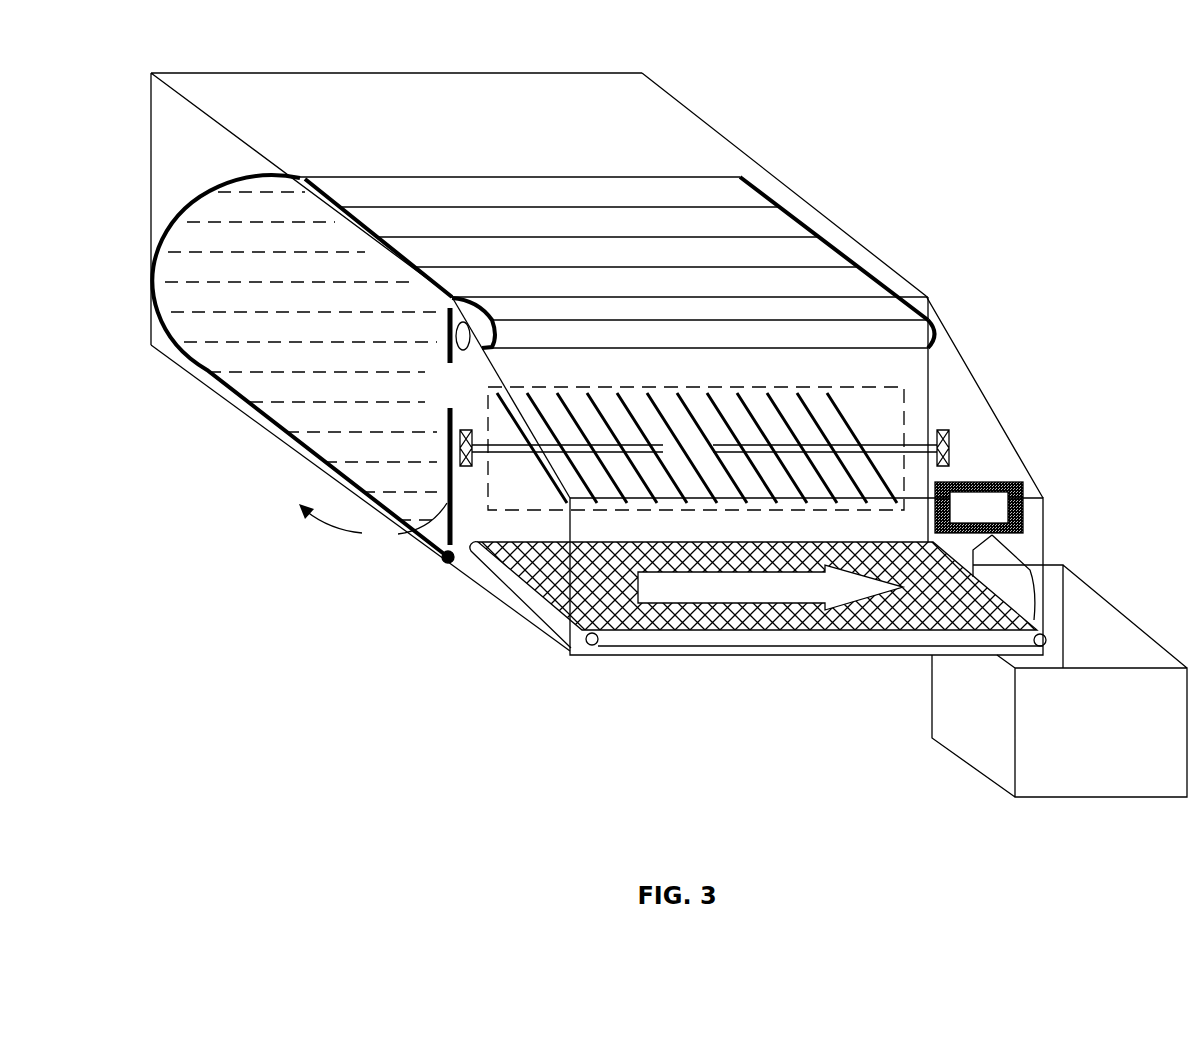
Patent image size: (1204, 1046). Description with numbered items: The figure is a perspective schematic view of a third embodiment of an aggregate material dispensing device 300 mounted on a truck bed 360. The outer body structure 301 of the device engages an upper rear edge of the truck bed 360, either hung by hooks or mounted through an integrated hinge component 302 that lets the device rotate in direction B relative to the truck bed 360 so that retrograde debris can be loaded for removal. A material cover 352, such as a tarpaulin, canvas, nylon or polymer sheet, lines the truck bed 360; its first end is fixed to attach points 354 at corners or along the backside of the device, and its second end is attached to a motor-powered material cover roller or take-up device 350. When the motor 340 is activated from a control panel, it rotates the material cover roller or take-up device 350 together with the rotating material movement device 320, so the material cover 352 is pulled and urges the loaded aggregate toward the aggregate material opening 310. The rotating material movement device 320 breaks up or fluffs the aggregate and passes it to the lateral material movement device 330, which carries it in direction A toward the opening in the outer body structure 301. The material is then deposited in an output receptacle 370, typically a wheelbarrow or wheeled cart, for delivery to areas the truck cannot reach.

The aggregate material dispensing device 300 is at (245, 37).
The outer body structure 301 is at (547, 640).
The integrated hinge component 302 is at (448, 426).
The aggregate material opening 310 is at (452, 500).
The rotating material movement device 320 is at (704, 448).
The lateral material movement device 330 is at (697, 625).
The motor 340 is at (985, 551).
The material cover roller or take-up device 350 is at (693, 324).
The material cover 352 is at (370, 402).
The attach points 354 is at (447, 560).
The truck bed 360 is at (832, 220).
The output receptacle 370 is at (1059, 681).